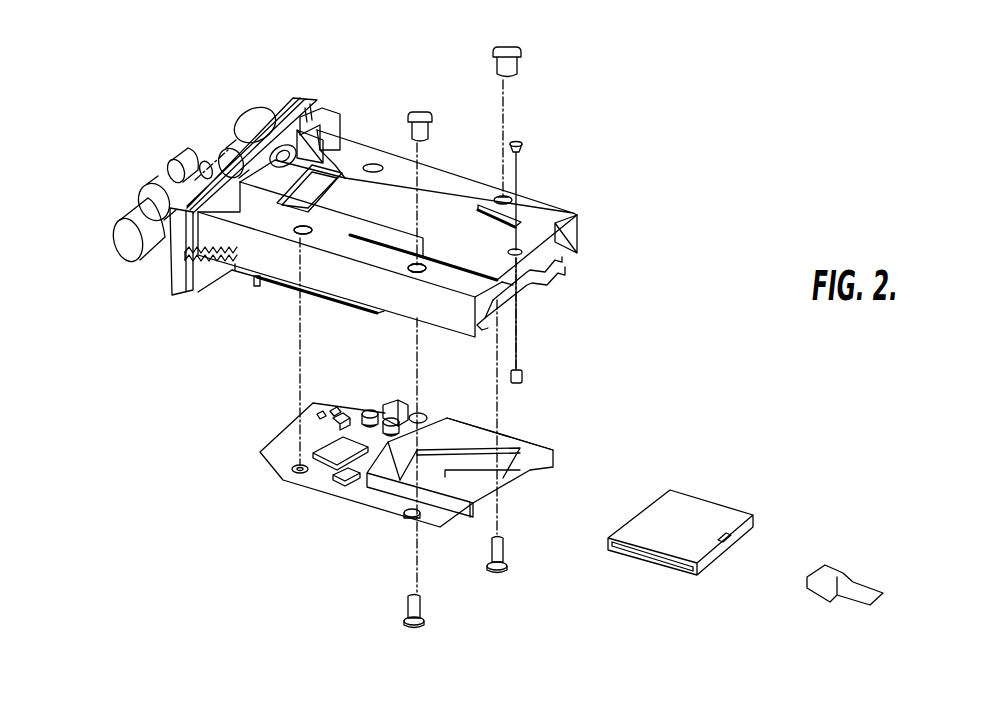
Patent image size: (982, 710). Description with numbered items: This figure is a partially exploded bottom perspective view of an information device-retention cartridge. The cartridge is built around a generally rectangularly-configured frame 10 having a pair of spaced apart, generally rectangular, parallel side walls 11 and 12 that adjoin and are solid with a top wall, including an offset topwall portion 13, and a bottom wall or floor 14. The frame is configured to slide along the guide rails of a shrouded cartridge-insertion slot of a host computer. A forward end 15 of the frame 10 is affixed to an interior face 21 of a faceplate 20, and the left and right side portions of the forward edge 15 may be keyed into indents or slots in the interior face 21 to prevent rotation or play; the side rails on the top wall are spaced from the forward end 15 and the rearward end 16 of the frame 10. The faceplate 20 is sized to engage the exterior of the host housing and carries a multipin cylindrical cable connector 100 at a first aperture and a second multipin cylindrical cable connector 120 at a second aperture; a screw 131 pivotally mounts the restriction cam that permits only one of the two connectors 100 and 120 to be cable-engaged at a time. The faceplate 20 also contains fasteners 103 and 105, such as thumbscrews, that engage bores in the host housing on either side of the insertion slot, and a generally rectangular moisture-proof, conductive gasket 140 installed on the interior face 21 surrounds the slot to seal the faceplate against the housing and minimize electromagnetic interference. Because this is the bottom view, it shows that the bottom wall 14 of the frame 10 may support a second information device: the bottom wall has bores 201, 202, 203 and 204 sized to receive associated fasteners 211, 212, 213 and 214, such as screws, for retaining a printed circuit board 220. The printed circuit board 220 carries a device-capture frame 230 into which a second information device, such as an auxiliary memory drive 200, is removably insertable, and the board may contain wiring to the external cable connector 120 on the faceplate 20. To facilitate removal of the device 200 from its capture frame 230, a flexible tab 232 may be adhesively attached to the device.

The frame 10 is at (419, 208).
The side wall 11 is at (405, 307).
The side wall 12 is at (473, 183).
The topwall portion 13 is at (472, 333).
The bottom wall 14 is at (352, 147).
The forward end 15 is at (330, 120).
The rearward end 16 is at (576, 233).
The faceplate 20 is at (300, 117).
The interior face 21 is at (183, 300).
The multipin cylindrical cable connector 100 is at (220, 143).
The fastener 103 is at (114, 237).
The fastener 105 is at (245, 118).
The multipin cylindrical cable connector 120 is at (143, 193).
The screw 131 is at (172, 156).
The gasket 140 is at (203, 290).
The auxiliary memory drive 200 is at (716, 498).
The bore 201 is at (378, 166).
The bore 202 is at (298, 237).
The bore 203 is at (506, 198).
The bore 204 is at (415, 266).
The fastener 211 is at (520, 52).
The fastener 212 is at (427, 112).
The fastener 213 is at (509, 573).
The fastener 214 is at (423, 612).
The printed circuit board 220 is at (317, 496).
The device-capture frame 230 is at (522, 432).
The flexible tab 232 is at (838, 565).